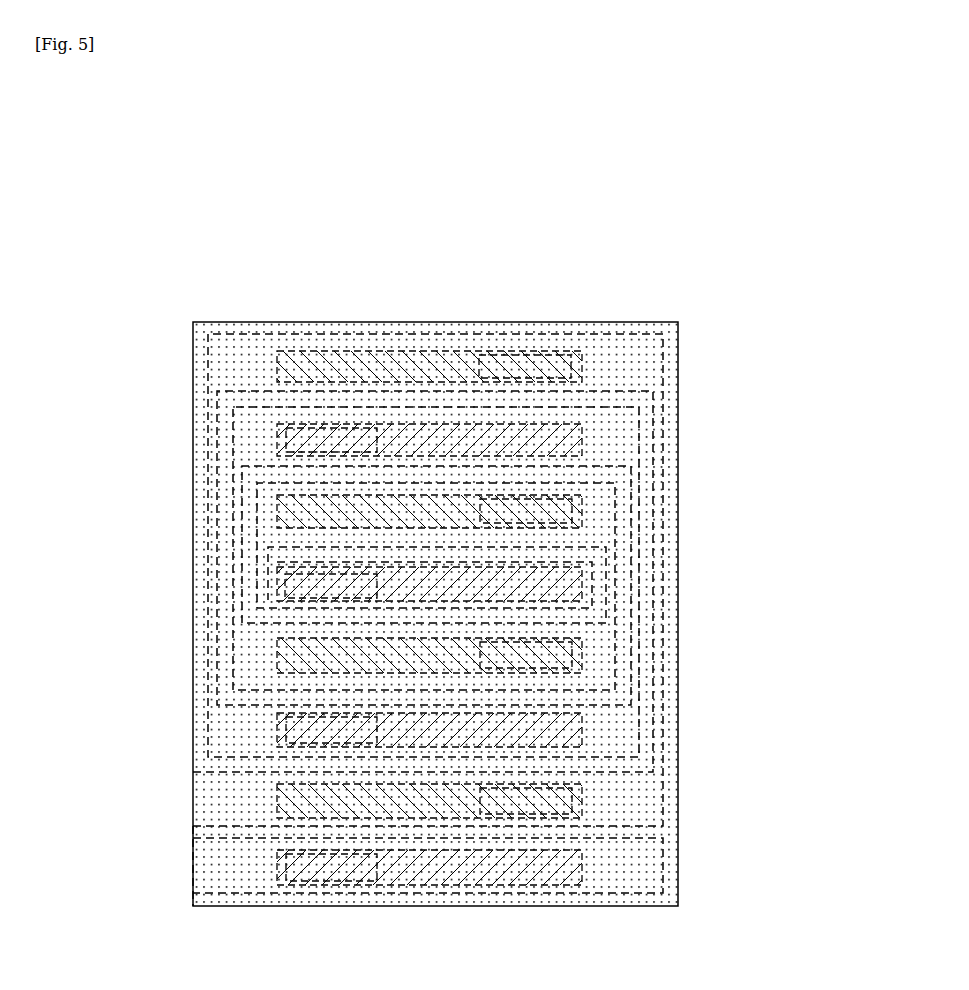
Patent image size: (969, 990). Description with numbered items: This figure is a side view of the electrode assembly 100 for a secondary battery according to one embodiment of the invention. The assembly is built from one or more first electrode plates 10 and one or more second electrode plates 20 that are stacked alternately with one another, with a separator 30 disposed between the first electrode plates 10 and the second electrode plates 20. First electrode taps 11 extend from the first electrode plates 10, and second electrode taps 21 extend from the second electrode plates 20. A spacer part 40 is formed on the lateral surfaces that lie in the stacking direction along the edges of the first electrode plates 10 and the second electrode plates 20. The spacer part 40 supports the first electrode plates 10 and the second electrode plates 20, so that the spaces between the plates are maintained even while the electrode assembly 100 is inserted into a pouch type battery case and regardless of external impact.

The electrode assembly 100 is at (540, 192).
The first electrode plate 10 is at (300, 375).
The first electrode tap 11 is at (540, 366).
The second electrode plate 20 is at (567, 448).
The second electrode tap 21 is at (300, 440).
The separator 30 is at (678, 540).
The spacer part 40 is at (217, 808).